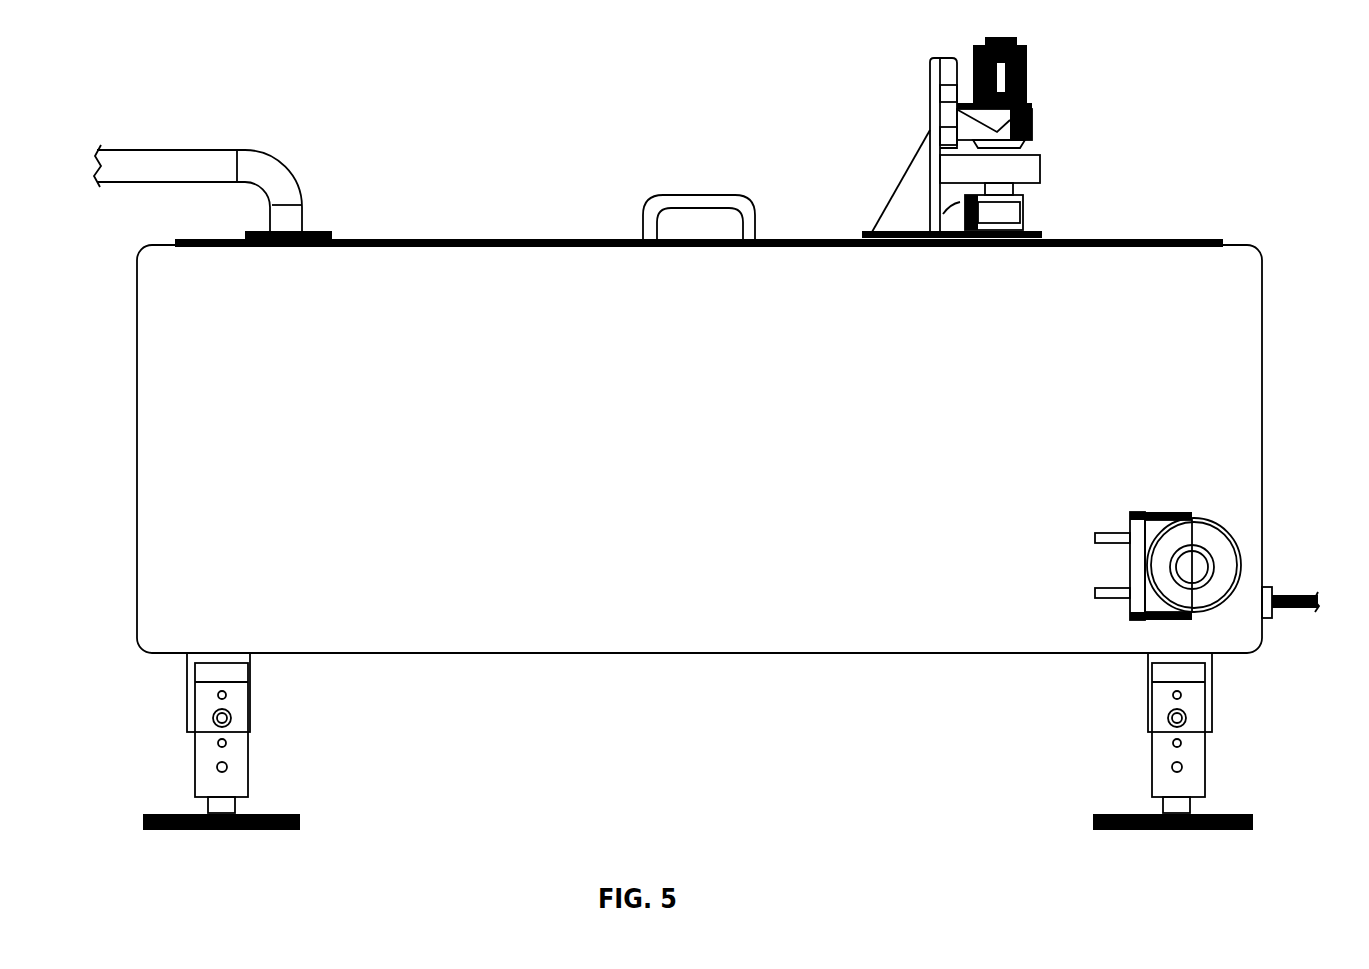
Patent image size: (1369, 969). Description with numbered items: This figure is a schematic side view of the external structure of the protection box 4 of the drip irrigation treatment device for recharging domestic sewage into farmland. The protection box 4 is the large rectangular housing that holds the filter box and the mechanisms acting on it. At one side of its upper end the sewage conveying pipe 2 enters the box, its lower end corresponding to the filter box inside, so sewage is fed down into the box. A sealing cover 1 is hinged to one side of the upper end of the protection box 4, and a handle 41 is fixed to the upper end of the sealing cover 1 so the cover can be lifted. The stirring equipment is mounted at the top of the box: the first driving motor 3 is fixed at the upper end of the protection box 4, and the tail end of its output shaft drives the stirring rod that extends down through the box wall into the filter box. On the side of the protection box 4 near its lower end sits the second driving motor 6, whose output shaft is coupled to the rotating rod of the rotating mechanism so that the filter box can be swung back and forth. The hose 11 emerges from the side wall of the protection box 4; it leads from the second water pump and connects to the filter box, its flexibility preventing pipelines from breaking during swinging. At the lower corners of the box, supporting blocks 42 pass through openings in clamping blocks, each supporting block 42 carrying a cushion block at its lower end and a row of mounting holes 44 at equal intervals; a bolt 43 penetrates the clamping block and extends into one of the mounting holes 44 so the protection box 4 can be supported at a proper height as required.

The sealing cover 1 is at (622, 242).
The sewage conveying pipe 2 is at (270, 180).
The first driving motor 3 is at (1002, 122).
The protection box 4 is at (713, 263).
The handle 41 is at (680, 196).
The supporting block 42 is at (1167, 688).
The bolt 43 is at (1168, 730).
The mounting holes 44 is at (1172, 767).
The second driving motor 6 is at (1207, 592).
The hose 11 is at (1292, 610).